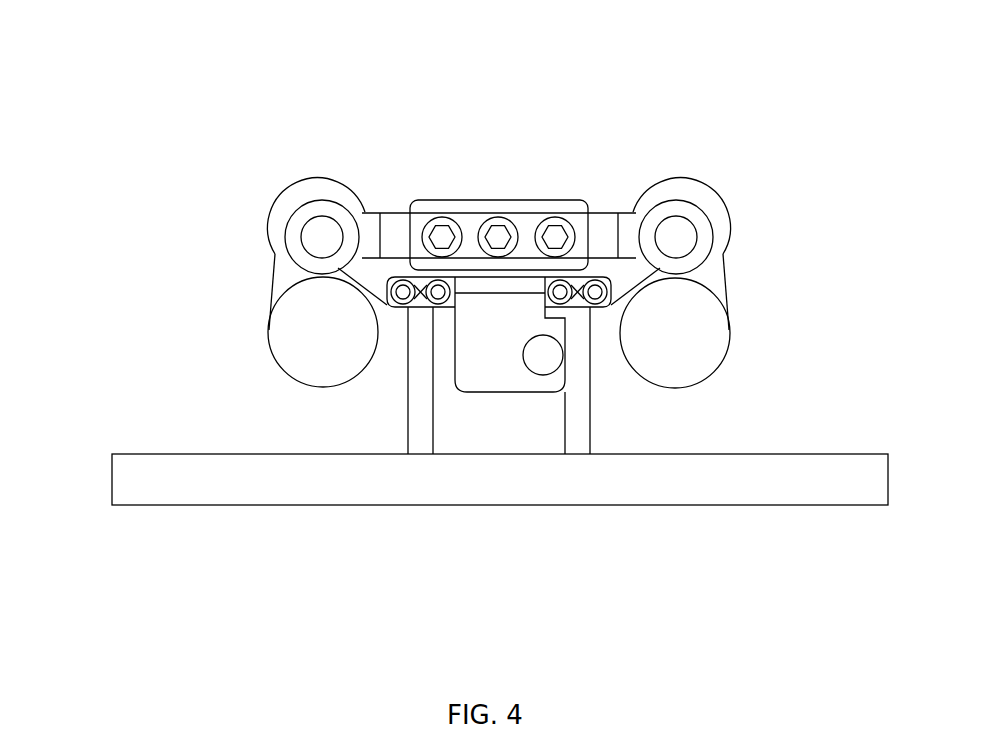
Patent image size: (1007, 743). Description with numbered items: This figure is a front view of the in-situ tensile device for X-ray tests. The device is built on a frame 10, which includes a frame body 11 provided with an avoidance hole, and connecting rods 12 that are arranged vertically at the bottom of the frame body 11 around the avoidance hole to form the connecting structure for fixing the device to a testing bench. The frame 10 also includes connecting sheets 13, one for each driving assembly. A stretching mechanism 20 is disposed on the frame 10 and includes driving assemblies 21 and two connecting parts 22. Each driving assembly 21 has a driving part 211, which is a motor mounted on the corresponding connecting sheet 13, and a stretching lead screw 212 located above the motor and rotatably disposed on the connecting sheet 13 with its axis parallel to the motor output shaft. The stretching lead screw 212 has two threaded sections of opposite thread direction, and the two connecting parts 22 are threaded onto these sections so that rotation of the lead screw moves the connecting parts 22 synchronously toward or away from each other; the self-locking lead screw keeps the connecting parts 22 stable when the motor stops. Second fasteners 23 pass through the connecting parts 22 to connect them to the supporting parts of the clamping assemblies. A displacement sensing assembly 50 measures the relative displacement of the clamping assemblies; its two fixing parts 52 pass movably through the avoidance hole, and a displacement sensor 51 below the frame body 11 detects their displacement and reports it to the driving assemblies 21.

The frame 10 is at (500, 459).
The frame body 11 is at (472, 285).
The connecting rods 12 is at (575, 397).
The connecting sheets 13 is at (377, 285).
The stretching mechanism 20 is at (406, 194).
The driving assemblies 21 is at (406, 277).
The driving part 211 is at (302, 320).
The stretching lead screw 212 is at (317, 240).
The connecting parts 22 is at (392, 231).
The second fasteners 23 is at (442, 235).
The displacement sensing assembly 50 is at (499, 216).
The displacement sensor 51 is at (548, 350).
The fixing parts 52 is at (513, 313).